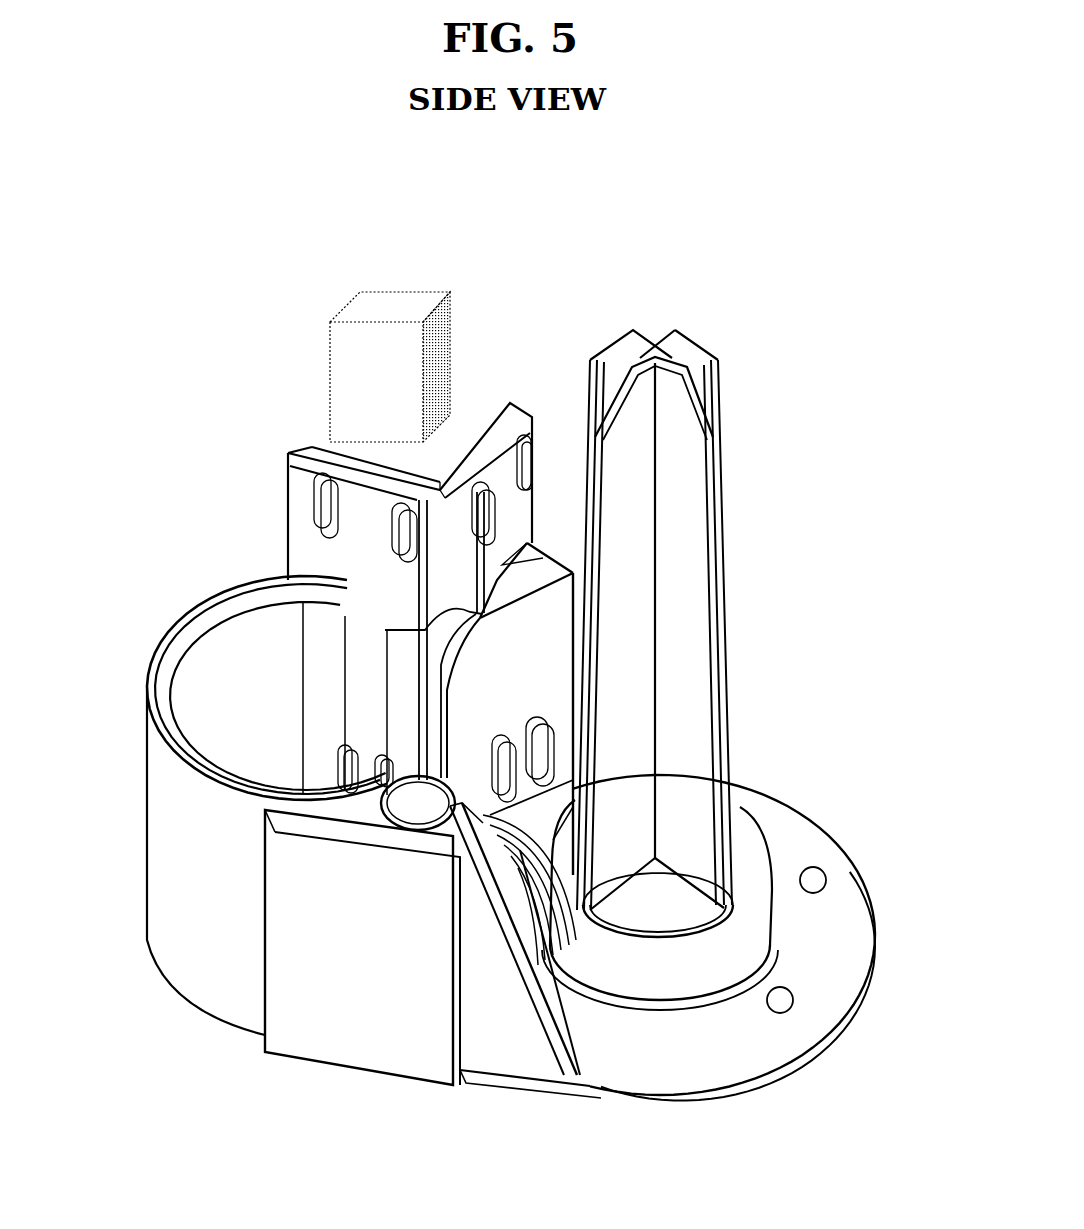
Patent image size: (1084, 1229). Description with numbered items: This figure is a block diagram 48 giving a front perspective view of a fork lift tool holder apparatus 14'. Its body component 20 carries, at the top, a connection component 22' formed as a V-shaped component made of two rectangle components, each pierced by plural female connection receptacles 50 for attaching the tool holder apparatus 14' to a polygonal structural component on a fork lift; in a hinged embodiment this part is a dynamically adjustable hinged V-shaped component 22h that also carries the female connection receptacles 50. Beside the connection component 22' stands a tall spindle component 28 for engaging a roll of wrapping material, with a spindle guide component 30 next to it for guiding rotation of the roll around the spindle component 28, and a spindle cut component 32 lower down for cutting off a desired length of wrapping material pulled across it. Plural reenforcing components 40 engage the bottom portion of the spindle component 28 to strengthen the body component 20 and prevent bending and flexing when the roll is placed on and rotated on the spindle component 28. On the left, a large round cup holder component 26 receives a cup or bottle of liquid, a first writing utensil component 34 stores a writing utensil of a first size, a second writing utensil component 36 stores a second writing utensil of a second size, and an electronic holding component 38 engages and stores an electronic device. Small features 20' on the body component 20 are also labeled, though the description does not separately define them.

The block diagram 48 is at (796, 138).
The connection component 22' is at (394, 580).
The hinged V-shaped component 22h is at (474, 556).
The female connection receptacles 50 is at (487, 485).
The spindle component 28 is at (703, 393).
The cup holder component 26 is at (252, 628).
The fork lift tool holder apparatus 14' is at (232, 775).
The spindle guide component 30 is at (530, 650).
The second writing utensil component 36 is at (360, 800).
The first writing utensil component 34 is at (428, 816).
The electronic holding component 38 is at (382, 898).
The spindle cut component 32 is at (478, 862).
The reenforcing components 40 is at (530, 905).
The body component 20 is at (667, 938).
The mounting holes 20' is at (844, 955).